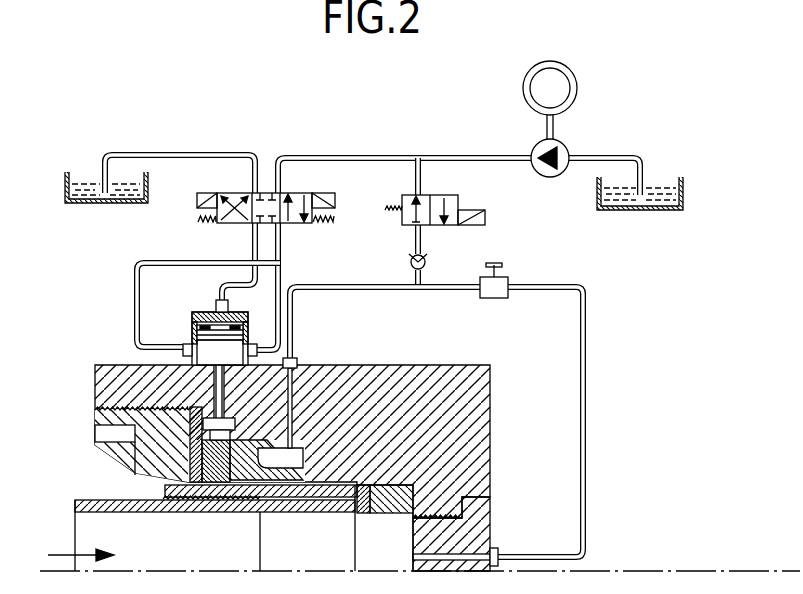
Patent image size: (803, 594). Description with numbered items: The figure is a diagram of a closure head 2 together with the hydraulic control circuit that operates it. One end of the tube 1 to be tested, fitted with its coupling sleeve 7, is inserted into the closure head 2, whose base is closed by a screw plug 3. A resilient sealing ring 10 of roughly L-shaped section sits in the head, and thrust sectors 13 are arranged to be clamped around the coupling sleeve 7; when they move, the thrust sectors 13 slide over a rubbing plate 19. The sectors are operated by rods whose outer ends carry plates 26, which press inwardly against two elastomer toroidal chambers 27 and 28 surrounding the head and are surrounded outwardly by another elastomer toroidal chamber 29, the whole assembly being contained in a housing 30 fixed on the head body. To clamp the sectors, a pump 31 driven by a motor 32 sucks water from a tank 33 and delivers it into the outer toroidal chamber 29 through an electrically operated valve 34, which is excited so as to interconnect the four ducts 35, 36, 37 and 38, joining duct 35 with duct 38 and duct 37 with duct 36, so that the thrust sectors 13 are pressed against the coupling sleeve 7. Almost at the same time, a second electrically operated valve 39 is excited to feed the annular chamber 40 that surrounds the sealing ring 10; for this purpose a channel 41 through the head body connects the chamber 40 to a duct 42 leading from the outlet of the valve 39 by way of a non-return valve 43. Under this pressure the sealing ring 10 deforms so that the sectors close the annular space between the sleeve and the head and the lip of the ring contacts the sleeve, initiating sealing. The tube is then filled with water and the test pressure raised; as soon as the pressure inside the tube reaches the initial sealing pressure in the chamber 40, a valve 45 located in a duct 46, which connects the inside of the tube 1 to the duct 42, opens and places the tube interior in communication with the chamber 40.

The tube 1 is at (86, 497).
The closure head 2 is at (440, 364).
The screw plug 3 is at (482, 546).
The coupling sleeve 7 is at (300, 498).
The resilient sealing ring 10 is at (256, 482).
The thrust sectors 13 is at (215, 480).
The rubbing plate 19 is at (193, 482).
The plate 26 is at (228, 318).
The toroidal chamber 27 is at (192, 347).
The toroidal chamber 28 is at (226, 352).
The outer toroidal chamber 29 is at (210, 315).
The housing 30 is at (196, 325).
The pump 31 is at (562, 152).
The motor 32 is at (572, 96).
The tank 33 is at (665, 212).
The electrically operated valve 34 is at (252, 196).
The duct 35 is at (325, 157).
The duct 36 is at (179, 154).
The duct 37 is at (180, 240).
The duct 38 is at (252, 242).
The electrically operated valve 39 is at (440, 227).
The annular chamber 40 is at (275, 462).
The channel 41 is at (310, 398).
The duct 42 is at (292, 342).
The non-return valve 43 is at (409, 260).
The valve 45 is at (505, 277).
The duct 46 is at (587, 390).